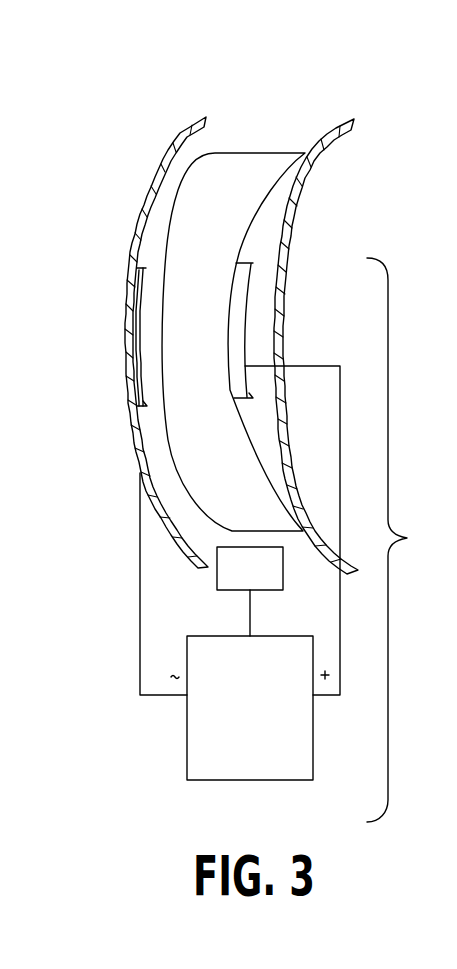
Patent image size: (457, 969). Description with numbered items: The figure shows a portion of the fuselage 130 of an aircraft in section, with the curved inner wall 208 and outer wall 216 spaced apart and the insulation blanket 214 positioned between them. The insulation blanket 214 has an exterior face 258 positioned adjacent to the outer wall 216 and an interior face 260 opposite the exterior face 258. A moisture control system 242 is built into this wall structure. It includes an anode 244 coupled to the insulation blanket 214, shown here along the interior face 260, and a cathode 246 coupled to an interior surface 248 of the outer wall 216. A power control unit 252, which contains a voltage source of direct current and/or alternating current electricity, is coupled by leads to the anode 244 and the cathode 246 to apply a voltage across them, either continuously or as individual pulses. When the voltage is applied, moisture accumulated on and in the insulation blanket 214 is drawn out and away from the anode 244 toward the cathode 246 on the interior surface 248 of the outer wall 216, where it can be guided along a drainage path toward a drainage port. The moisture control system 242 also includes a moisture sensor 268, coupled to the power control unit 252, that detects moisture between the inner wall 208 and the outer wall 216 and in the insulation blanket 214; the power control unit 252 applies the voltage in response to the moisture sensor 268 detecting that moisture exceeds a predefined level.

The fuselage 130 is at (125, 128).
The outer wall 216 is at (183, 121).
The cathode 246 is at (128, 313).
The interior surface 248 is at (190, 151).
The insulation blanket 214 is at (278, 155).
The exterior face 258 is at (148, 250).
The anode 244 is at (237, 275).
The inner wall 208 is at (356, 122).
The interior face 260 is at (287, 207).
The moisture control system 242 is at (408, 540).
The moisture sensor 268 is at (215, 583).
The power control unit 252 is at (263, 773).